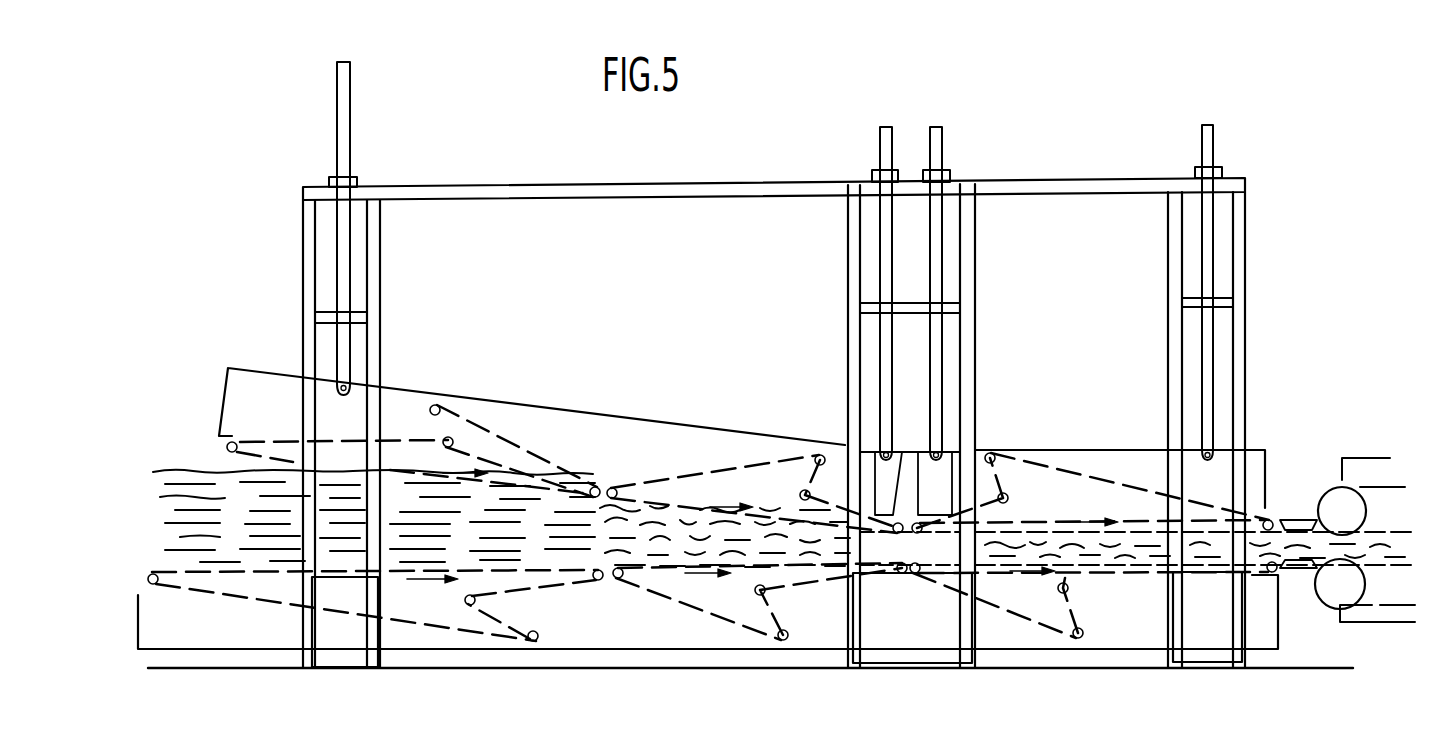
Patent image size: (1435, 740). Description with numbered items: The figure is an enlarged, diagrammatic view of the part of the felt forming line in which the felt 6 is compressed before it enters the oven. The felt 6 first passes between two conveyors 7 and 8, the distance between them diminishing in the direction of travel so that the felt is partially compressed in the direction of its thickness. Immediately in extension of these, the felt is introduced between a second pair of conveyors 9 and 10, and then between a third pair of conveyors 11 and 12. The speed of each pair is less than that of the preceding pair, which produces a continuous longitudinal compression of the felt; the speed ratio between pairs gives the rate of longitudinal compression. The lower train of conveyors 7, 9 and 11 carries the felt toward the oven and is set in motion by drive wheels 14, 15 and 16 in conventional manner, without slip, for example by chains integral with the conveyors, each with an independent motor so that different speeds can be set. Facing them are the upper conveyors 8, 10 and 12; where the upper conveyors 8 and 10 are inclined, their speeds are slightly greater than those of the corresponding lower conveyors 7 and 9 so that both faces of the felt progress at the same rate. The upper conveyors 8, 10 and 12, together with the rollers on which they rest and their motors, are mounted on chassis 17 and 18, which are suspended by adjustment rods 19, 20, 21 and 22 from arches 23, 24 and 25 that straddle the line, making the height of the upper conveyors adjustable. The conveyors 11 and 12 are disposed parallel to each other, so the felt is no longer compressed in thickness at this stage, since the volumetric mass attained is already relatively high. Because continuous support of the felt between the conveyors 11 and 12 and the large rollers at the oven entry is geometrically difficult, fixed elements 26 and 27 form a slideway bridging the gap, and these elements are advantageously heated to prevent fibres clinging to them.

The felt 6 is at (180, 525).
The conveyor 7 is at (245, 599).
The conveyor 8 is at (535, 456).
The conveyor 9 is at (700, 613).
The conveyor 10 is at (735, 466).
The conveyor 11 is at (1118, 578).
The conveyor 12 is at (1103, 478).
The drive wheel 14 is at (598, 581).
The drive wheel 15 is at (900, 576).
The drive wheel 16 is at (1272, 573).
The chassis 17 is at (592, 412).
The chassis 18 is at (1118, 450).
The adjustment rod 19 is at (345, 114).
The adjustment rod 20 is at (880, 141).
The adjustment rod 21 is at (942, 145).
The adjustment rod 22 is at (1213, 145).
The arch 23 is at (384, 288).
The arch 24 is at (975, 315).
The arch 25 is at (1250, 257).
The fixed element 26 is at (1303, 519).
The fixed element 27 is at (1300, 570).